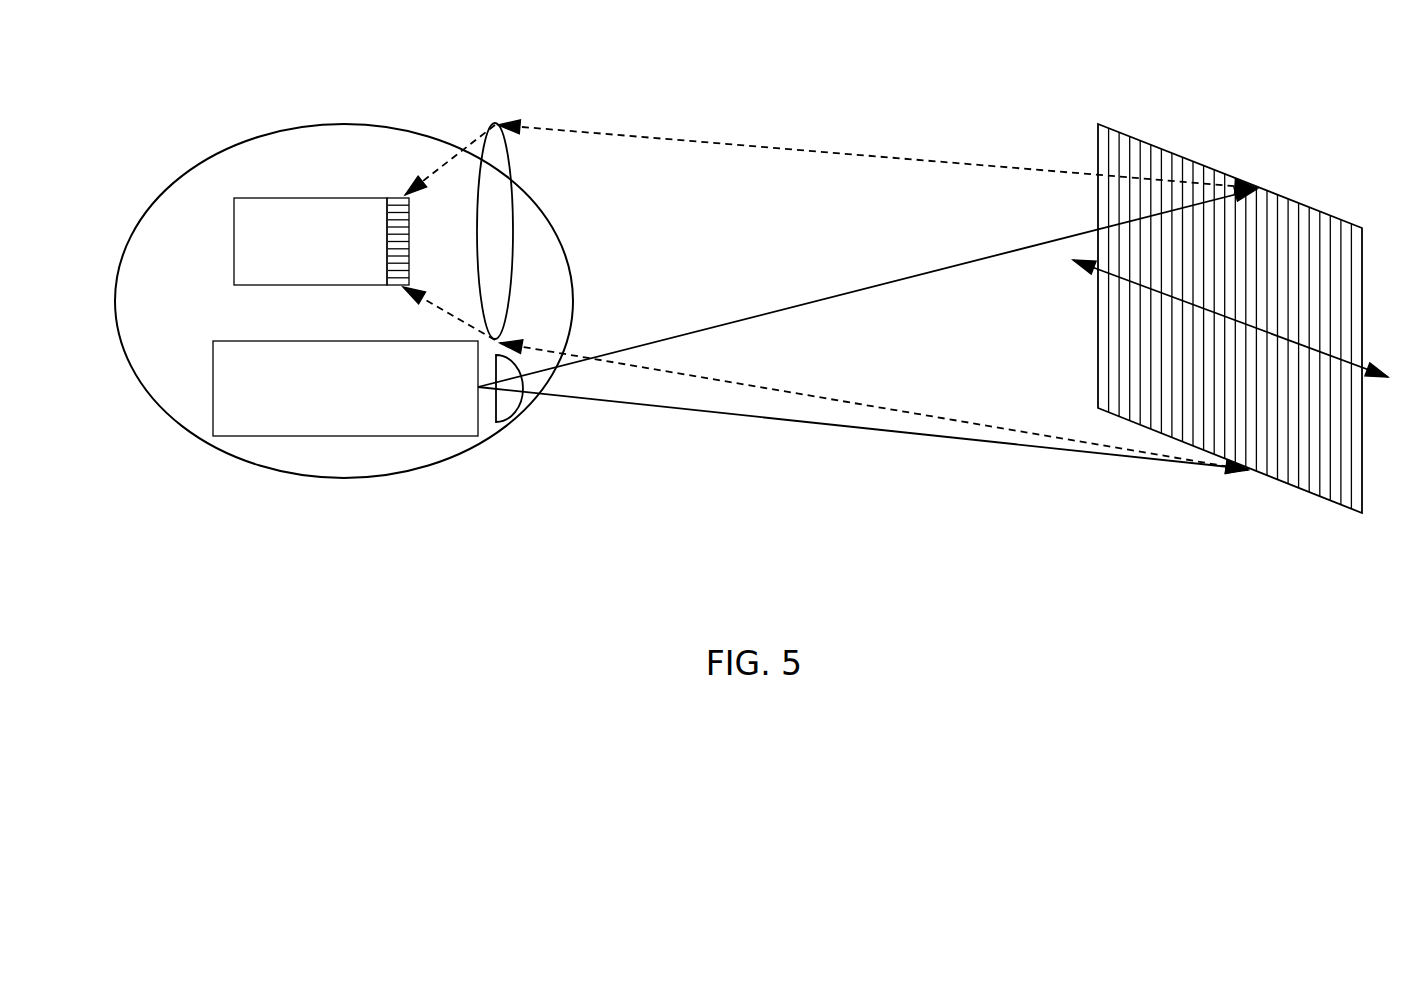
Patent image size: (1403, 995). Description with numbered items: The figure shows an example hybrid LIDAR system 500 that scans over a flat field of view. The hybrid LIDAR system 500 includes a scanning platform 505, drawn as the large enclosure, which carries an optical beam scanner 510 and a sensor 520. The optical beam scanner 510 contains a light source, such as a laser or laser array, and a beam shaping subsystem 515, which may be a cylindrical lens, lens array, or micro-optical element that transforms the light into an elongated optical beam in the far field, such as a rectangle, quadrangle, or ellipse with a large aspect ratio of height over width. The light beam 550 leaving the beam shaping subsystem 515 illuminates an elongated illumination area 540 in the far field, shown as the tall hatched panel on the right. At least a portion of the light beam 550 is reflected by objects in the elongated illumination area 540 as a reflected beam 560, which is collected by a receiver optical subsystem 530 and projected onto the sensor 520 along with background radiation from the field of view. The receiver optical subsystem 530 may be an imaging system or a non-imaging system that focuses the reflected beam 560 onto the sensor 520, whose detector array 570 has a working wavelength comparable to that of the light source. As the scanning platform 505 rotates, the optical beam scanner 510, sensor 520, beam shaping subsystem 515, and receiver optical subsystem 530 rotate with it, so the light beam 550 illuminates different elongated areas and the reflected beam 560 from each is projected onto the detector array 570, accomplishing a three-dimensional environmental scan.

The hybrid LIDAR system 500 is at (728, 43).
The scanning platform 505 is at (315, 124).
The optical beam scanner 510 is at (324, 427).
The beam shaping subsystem 515 is at (502, 425).
The sensor 520 is at (290, 267).
The receiver optical subsystem 530 is at (497, 215).
The elongated illumination area 540 is at (1250, 233).
The light beam 550 is at (883, 280).
The reflected beam 560 is at (873, 157).
The detector array 570 is at (397, 195).